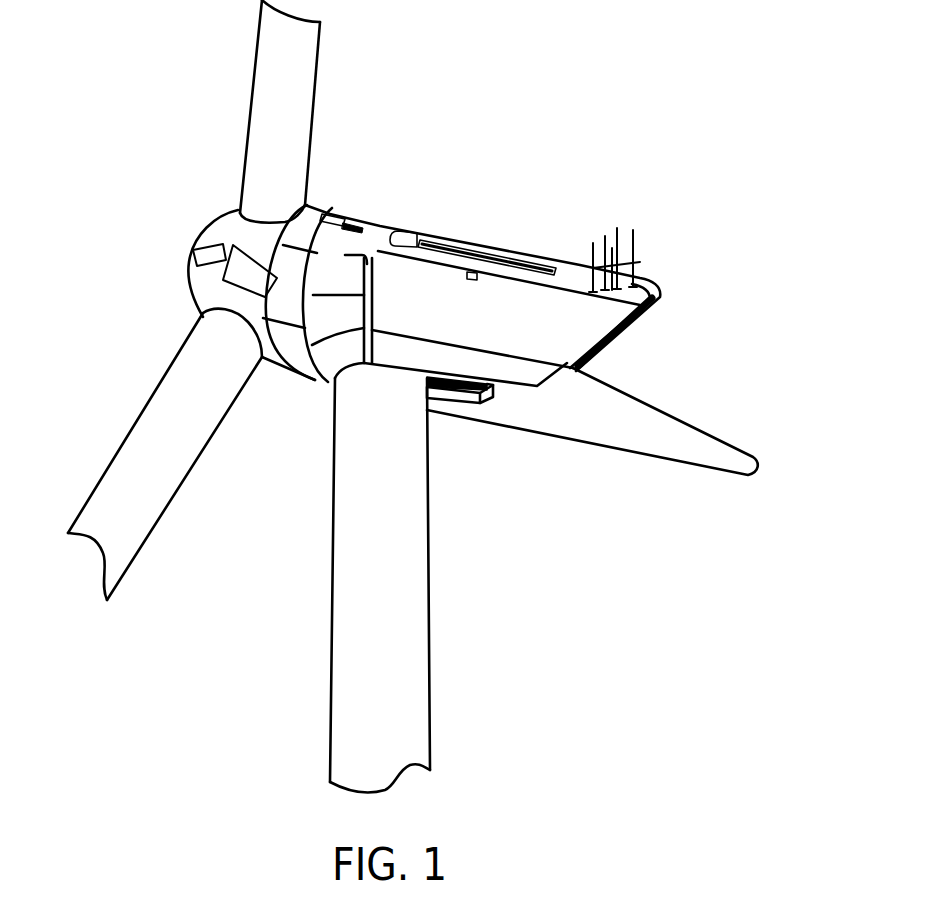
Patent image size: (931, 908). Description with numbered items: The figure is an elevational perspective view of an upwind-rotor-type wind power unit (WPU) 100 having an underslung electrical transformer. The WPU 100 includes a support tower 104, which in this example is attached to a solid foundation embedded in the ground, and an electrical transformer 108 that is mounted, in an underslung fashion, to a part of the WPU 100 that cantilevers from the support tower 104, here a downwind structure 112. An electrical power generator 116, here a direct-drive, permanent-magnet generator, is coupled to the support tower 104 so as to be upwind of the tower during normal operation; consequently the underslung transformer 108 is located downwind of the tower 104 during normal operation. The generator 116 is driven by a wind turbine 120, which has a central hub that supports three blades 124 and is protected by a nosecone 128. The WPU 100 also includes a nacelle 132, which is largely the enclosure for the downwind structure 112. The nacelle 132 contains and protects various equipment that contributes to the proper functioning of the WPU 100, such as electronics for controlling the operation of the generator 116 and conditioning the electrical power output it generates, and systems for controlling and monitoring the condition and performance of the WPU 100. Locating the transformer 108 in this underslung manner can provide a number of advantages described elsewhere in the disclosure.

The wind power unit 100 is at (605, 101).
The support tower 104 is at (430, 645).
The electrical transformer 108 is at (493, 393).
The downwind structure 112 is at (528, 386).
The electrical power generator 116 is at (338, 216).
The wind turbine 120 is at (310, 167).
The blades 124 is at (252, 65).
The nosecone 128 is at (190, 274).
The nacelle 132 is at (647, 268).